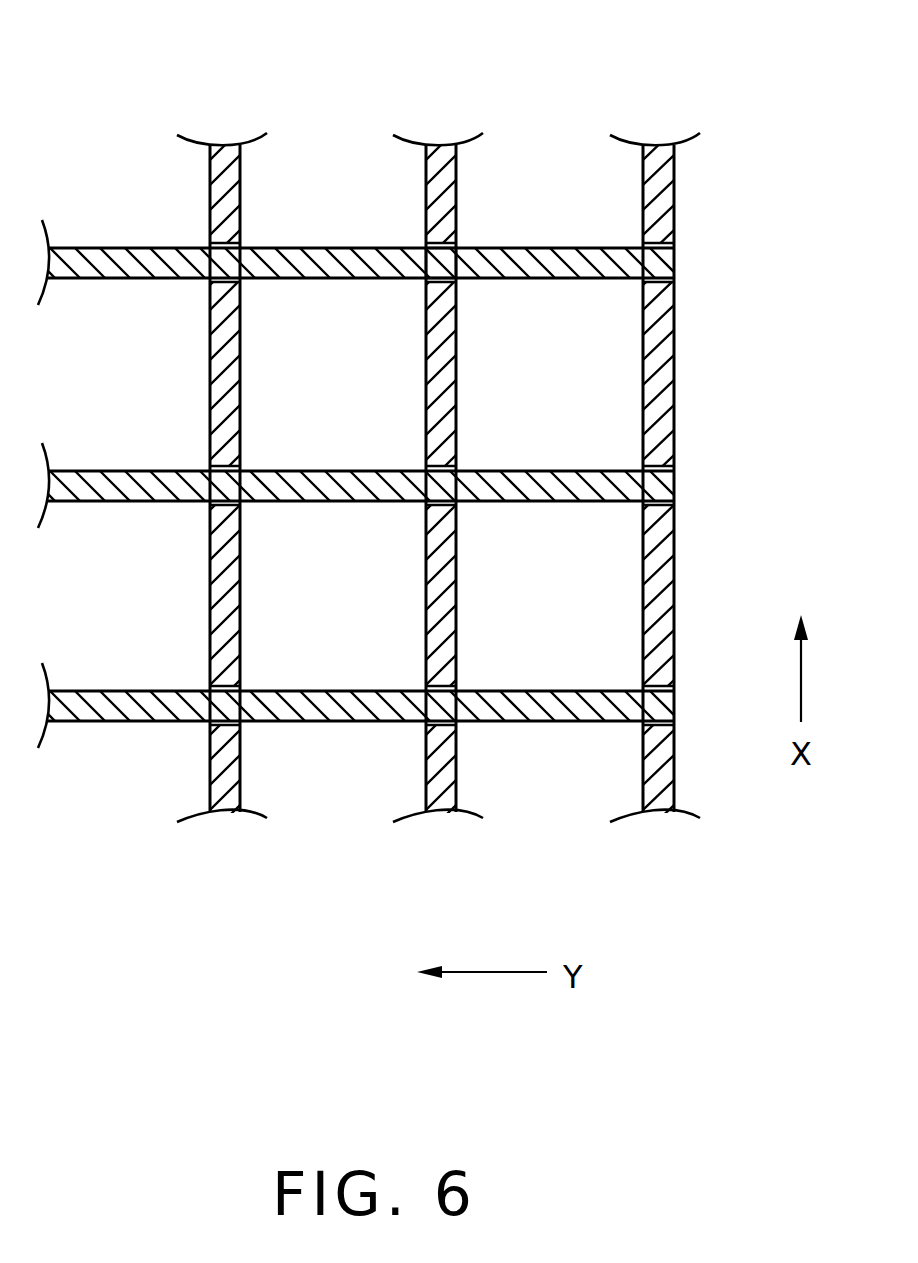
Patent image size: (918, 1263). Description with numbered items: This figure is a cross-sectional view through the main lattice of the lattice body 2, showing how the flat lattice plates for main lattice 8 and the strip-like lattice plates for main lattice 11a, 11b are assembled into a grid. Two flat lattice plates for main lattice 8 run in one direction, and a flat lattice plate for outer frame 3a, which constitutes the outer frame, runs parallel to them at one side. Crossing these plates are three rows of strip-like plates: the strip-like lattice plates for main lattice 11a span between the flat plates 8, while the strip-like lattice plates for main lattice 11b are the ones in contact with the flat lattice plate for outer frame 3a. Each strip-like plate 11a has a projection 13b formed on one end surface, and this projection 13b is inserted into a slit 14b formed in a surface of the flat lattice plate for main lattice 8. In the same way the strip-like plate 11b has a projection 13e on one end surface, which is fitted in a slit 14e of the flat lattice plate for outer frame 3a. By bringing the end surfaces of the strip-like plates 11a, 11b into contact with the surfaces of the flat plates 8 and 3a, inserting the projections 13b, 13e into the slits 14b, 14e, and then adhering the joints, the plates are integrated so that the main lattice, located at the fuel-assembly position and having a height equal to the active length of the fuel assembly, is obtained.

The lattice body 2 is at (424, 458).
The flat lattice plate for outer frame 3a is at (650, 813).
The flat lattice plate for main lattice 8 is at (221, 815).
The strip-like lattice plate for main lattice 11a is at (115, 248).
The strip-like lattice plate for main lattice 11b is at (547, 248).
The projection 13b is at (437, 265).
The projection 13e is at (675, 266).
The slit 14b is at (442, 243).
The slit 14e is at (675, 228).